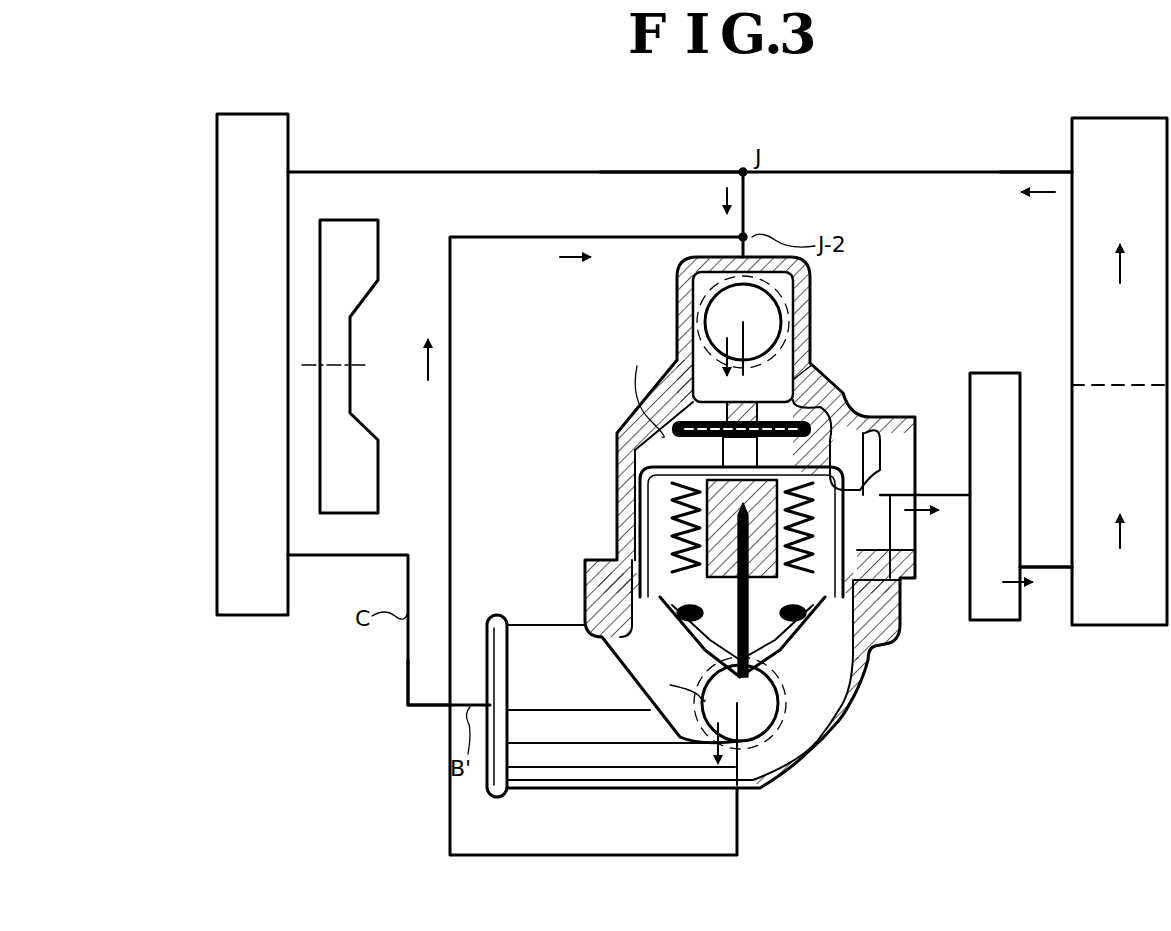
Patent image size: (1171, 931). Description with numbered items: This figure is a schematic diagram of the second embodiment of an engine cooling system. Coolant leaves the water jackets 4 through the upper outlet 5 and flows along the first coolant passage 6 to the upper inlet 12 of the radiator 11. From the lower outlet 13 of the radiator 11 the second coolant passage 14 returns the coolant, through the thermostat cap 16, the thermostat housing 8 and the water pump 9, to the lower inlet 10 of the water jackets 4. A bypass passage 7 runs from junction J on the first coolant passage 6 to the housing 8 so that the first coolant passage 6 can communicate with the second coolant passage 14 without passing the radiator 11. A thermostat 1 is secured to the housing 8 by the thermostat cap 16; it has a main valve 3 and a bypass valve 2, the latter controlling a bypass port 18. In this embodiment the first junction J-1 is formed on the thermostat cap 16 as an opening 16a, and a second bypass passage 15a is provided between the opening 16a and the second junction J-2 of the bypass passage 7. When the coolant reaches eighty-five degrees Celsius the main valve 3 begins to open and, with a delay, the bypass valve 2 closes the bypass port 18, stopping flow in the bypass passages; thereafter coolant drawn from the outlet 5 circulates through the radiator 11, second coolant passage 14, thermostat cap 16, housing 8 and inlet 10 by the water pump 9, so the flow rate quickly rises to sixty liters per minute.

The thermostat 1 is at (711, 551).
The bypass valve 2 is at (845, 400).
The main valve 3 is at (683, 583).
The water jackets 4 is at (1072, 268).
The upper outlet 5 is at (1072, 172).
The first coolant passage 6 is at (680, 172).
The bypass passage 7 is at (748, 218).
The thermostat housing 8 is at (617, 443).
The water pump 9 is at (992, 373).
The lower inlet 10 is at (1068, 620).
The radiator 11 is at (217, 302).
The upper inlet 12 is at (290, 172).
The lower outlet 13 is at (290, 560).
The second coolant passage 14 is at (418, 707).
The second bypass passage 15a is at (452, 382).
The thermostat cap 16 is at (636, 790).
The opening 16a is at (780, 777).
The bypass port 18 is at (798, 368).